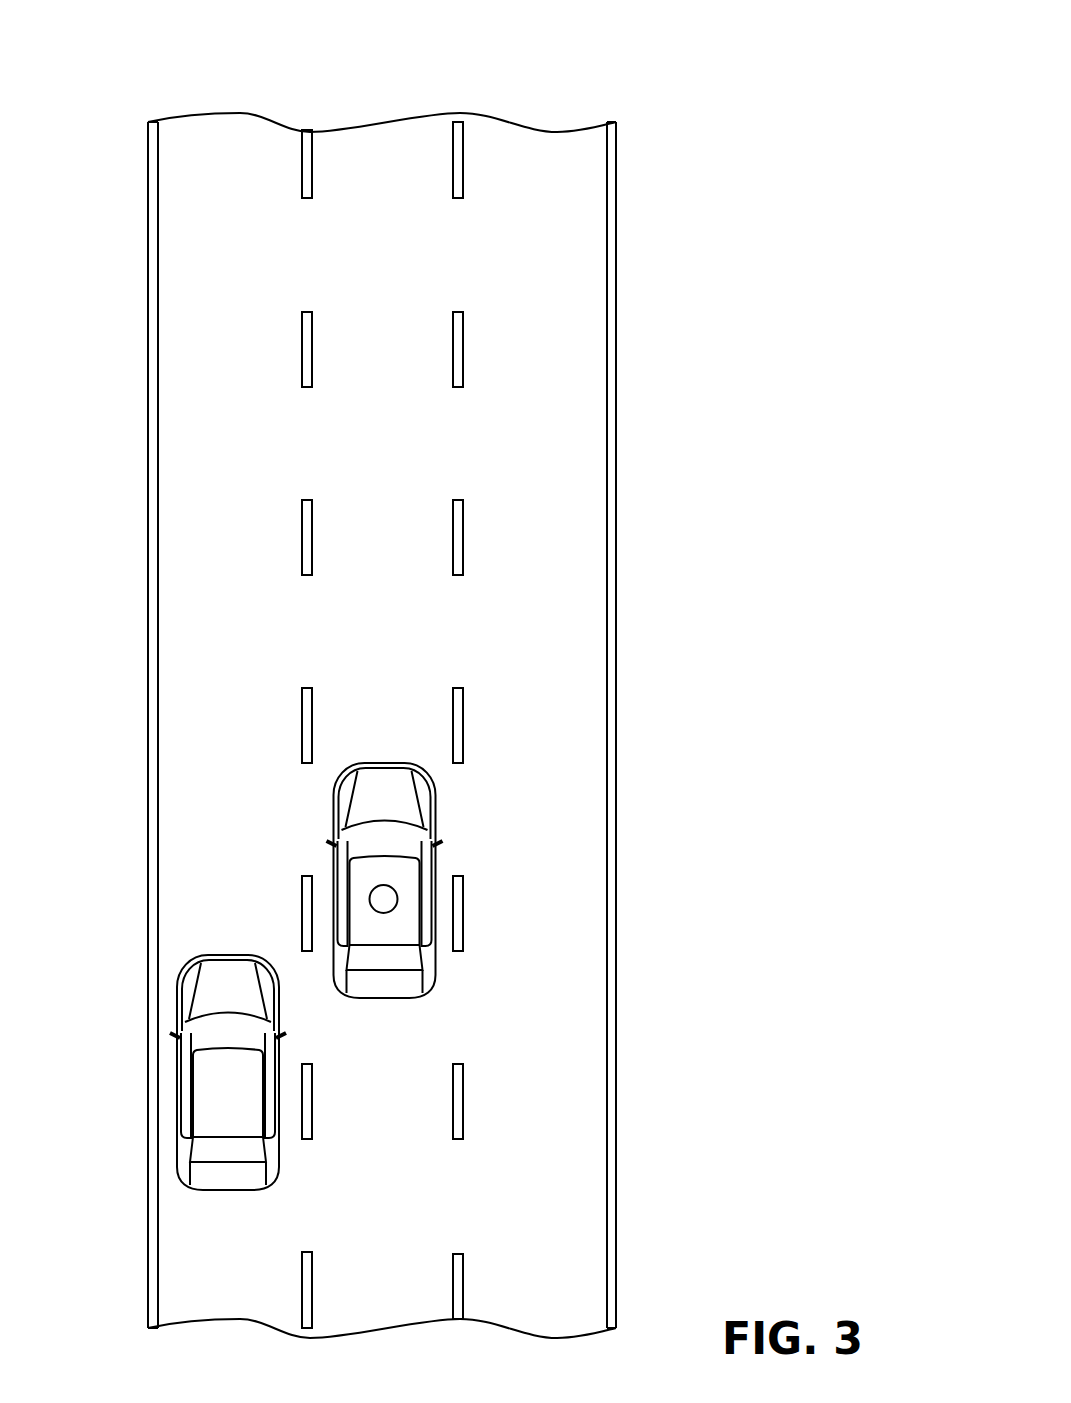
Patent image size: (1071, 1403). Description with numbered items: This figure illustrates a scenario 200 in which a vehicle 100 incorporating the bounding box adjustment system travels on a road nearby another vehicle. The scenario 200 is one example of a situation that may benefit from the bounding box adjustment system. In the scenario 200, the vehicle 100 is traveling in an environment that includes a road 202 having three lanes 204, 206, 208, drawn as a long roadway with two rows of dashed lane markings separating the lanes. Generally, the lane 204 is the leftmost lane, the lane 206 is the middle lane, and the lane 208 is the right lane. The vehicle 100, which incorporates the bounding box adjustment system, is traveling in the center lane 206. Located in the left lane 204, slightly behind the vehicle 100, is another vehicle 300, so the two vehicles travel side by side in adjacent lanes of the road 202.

The scenario 200 is at (416, 676).
The road 202 is at (622, 255).
The lane 204 is at (246, 602).
The lane 206 is at (380, 415).
The lane 208 is at (523, 542).
The vehicle 100 is at (373, 760).
The another vehicle 300 is at (186, 1088).